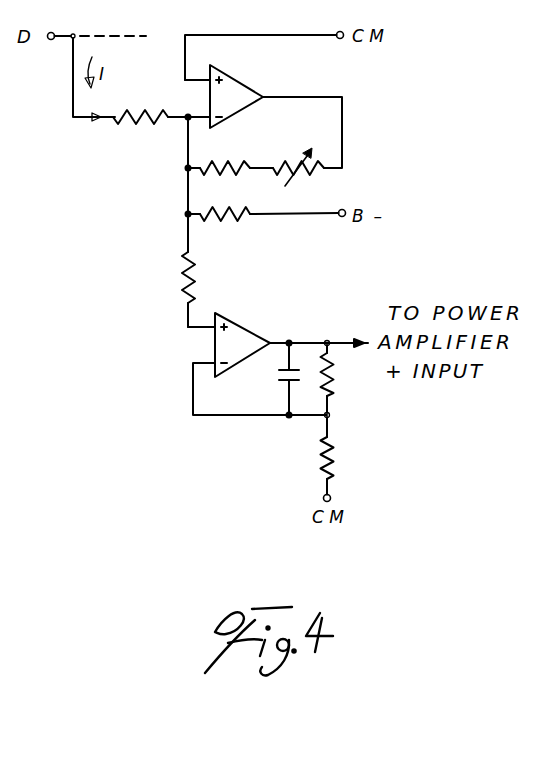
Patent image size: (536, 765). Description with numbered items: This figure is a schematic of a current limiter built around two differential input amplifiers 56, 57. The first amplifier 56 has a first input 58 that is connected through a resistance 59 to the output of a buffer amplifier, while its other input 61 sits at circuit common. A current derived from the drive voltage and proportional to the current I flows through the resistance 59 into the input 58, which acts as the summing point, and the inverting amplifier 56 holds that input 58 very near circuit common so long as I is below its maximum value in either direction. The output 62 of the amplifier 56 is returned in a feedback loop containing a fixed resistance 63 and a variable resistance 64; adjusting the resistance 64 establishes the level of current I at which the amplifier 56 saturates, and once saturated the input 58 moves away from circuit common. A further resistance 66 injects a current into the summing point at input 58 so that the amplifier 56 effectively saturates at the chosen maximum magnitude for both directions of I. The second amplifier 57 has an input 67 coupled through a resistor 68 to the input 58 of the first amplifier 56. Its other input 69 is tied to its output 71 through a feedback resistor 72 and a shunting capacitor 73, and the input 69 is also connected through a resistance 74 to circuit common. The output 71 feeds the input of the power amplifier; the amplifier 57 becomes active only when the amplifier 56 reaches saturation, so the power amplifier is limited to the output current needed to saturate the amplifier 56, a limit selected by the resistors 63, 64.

The differential input amplifier 56 is at (246, 84).
The differential input amplifier 57 is at (240, 328).
The first input 58 is at (205, 115).
The resistance 59 is at (127, 124).
The other input 61 is at (196, 84).
The output 62 is at (319, 96).
The fixed resistance 63 is at (215, 160).
The variable resistance 64 is at (287, 160).
The resistance 66 is at (237, 221).
The input 67 is at (204, 329).
The resistor 68 is at (186, 266).
The input 69 is at (204, 360).
The output 71 is at (300, 343).
The feedback resistor 72 is at (332, 378).
The shunting capacitor 73 is at (279, 378).
The resistance 74 is at (338, 460).